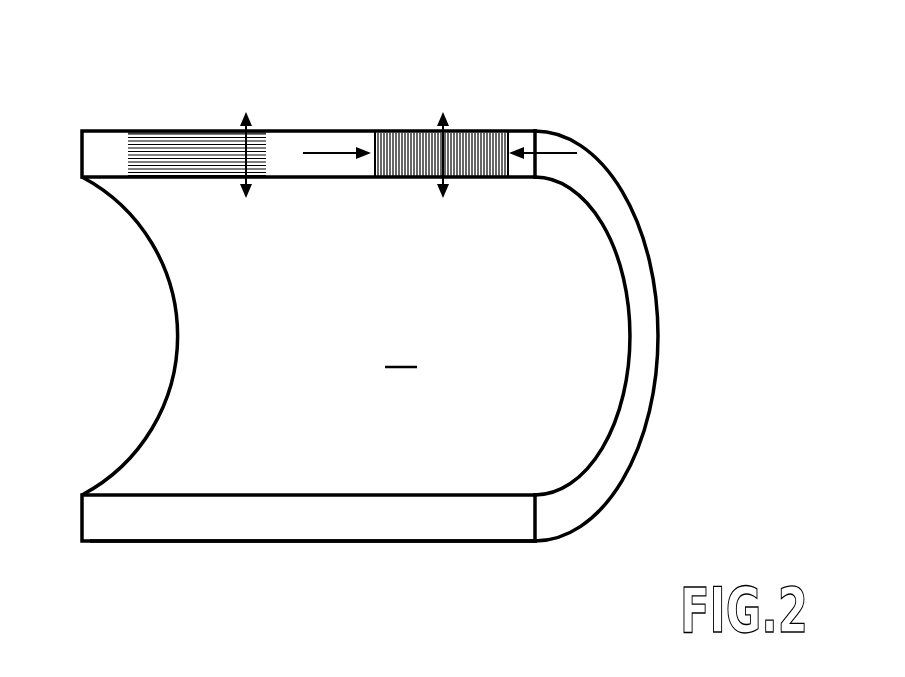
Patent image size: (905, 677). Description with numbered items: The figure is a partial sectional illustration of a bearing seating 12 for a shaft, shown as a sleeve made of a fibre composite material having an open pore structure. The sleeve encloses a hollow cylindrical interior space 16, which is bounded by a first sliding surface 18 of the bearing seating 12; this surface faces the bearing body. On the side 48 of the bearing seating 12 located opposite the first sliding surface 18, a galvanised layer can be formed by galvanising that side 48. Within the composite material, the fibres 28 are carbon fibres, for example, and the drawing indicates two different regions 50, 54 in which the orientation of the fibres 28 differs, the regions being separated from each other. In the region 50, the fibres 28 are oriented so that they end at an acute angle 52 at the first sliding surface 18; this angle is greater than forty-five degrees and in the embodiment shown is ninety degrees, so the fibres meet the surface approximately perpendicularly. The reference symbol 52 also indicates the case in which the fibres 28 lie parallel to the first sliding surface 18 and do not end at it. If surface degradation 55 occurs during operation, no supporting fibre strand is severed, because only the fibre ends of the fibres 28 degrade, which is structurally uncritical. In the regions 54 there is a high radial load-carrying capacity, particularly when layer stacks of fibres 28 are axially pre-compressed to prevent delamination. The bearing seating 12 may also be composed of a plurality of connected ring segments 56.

The bearing seating 12 is at (347, 520).
The interior space 16 is at (201, 397).
The first sliding surface 18 is at (401, 351).
The fibres 28 is at (199, 131).
The side 48 is at (422, 541).
The region 50 is at (482, 96).
The acute angle 52 is at (508, 176).
The region 54 is at (158, 108).
The surface degradation 55 is at (213, 165).
The ring segments 56 is at (473, 165).